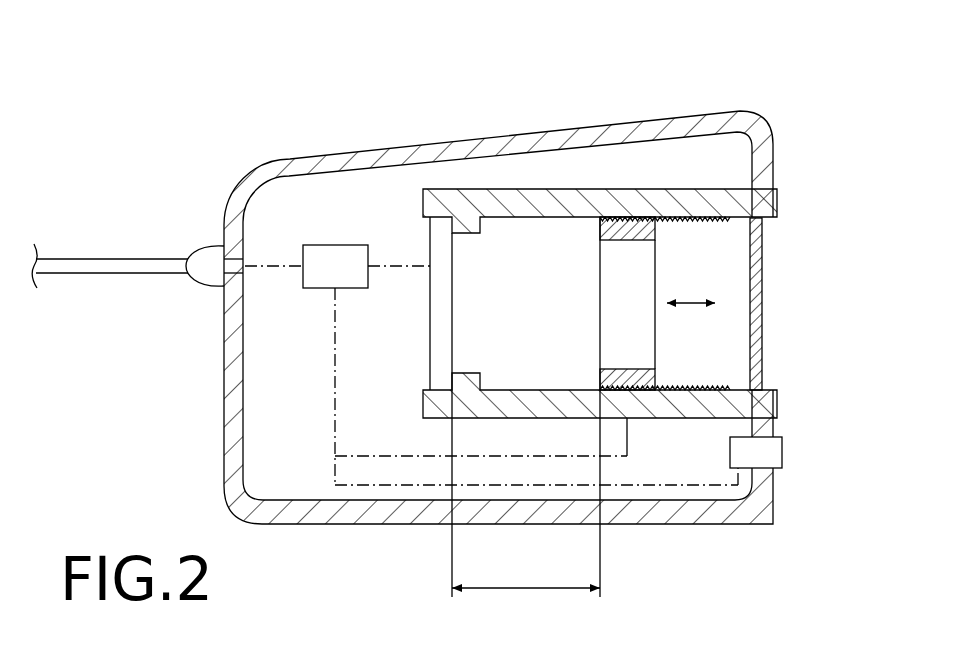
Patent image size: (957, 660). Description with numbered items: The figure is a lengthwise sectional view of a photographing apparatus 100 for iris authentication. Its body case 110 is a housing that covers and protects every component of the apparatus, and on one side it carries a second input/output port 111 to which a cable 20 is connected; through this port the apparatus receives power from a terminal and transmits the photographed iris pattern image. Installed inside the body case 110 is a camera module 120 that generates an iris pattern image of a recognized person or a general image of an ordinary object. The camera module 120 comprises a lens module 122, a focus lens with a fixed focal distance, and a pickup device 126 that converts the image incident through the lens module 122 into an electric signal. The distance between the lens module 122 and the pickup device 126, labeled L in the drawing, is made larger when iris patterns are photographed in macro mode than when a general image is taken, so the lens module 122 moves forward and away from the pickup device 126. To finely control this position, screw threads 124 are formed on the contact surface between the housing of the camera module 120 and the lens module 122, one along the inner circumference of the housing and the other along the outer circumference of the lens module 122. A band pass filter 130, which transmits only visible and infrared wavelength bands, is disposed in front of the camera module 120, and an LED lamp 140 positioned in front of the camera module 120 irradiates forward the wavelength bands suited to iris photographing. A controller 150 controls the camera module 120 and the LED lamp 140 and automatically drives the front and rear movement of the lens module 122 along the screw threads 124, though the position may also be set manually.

The cable 20 is at (113, 263).
The photographing apparatus for iris authentication 100 is at (255, 143).
The body case 110 is at (356, 165).
The second input/output port 111 is at (211, 256).
The camera module 120 is at (663, 177).
The lens module 122 is at (625, 245).
The screw threads 124 is at (695, 392).
The pickup device 126 is at (440, 362).
The band pass filter 130 is at (760, 281).
The LED lamp 140 is at (772, 457).
The controller 150 is at (491, 365).